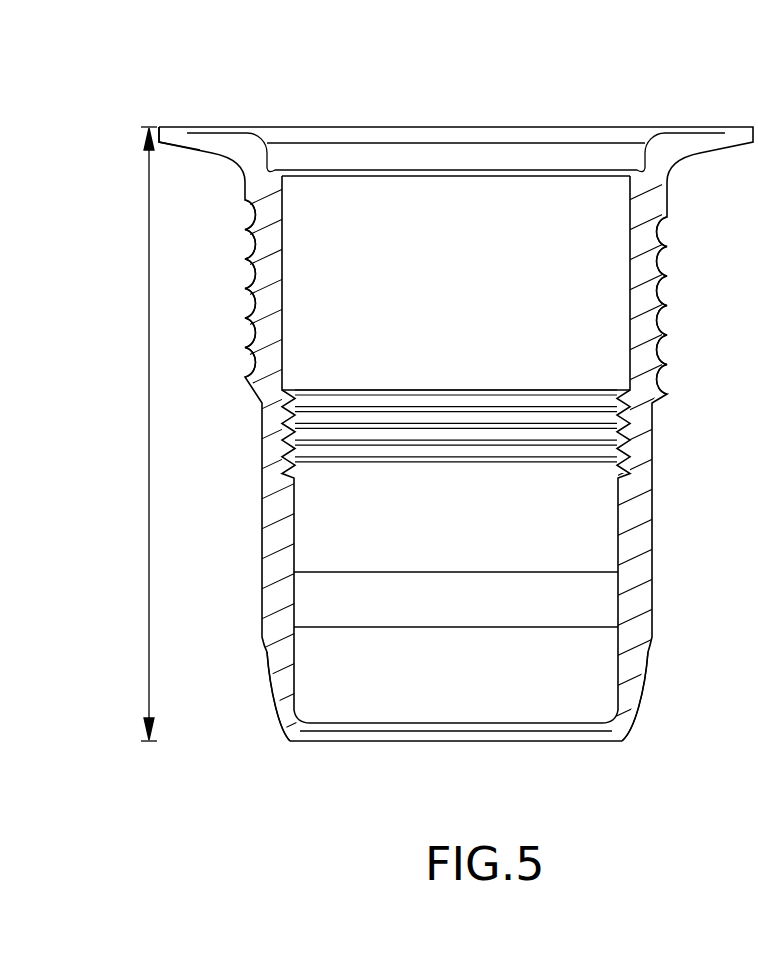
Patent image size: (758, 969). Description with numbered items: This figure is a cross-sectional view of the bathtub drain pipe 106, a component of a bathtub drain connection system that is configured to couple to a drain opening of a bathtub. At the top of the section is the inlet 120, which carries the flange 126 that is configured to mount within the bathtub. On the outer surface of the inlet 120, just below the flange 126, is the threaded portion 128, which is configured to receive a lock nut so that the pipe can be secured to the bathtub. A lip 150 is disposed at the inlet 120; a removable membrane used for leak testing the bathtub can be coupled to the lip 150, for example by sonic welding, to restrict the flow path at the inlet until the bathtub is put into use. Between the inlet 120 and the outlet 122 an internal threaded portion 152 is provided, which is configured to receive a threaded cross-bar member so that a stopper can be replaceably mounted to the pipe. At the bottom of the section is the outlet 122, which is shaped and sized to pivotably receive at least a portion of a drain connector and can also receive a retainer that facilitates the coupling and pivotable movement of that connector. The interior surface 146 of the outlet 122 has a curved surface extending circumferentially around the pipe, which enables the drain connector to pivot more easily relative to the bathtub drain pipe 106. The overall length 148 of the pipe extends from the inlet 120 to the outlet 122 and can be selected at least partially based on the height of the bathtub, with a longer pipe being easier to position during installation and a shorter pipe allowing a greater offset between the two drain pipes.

The bathtub drain pipe 106 is at (330, 106).
The inlet 120 is at (495, 128).
The flange 126 is at (188, 130).
The lip 150 is at (278, 172).
The threaded portion 128 is at (663, 287).
The internal threaded portion 152 is at (292, 432).
The interior surface 146 is at (430, 697).
The outlet 122 is at (630, 714).
The length 148 is at (148, 403).